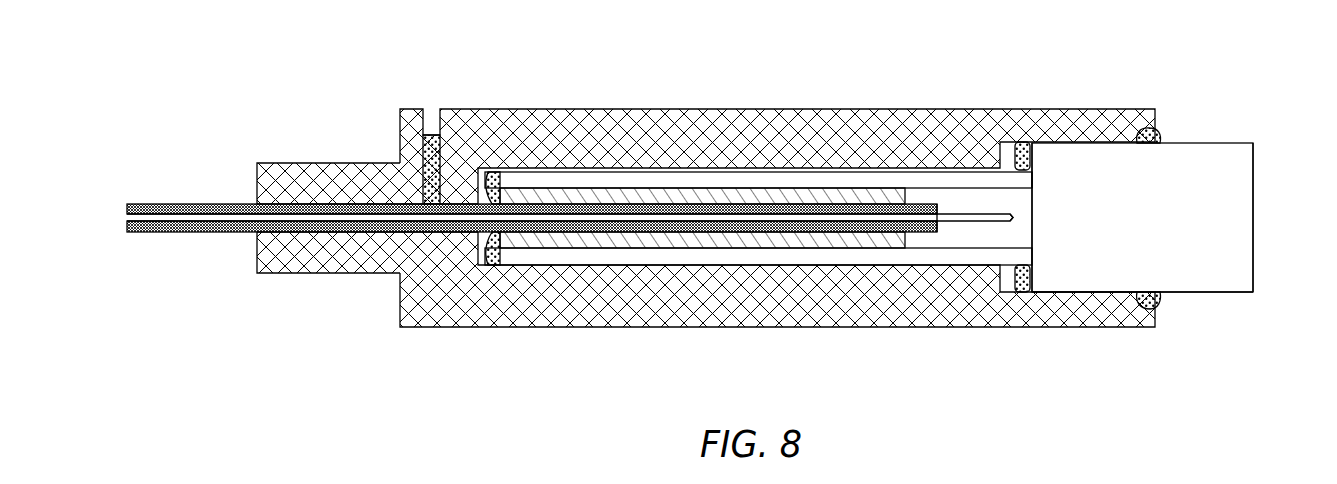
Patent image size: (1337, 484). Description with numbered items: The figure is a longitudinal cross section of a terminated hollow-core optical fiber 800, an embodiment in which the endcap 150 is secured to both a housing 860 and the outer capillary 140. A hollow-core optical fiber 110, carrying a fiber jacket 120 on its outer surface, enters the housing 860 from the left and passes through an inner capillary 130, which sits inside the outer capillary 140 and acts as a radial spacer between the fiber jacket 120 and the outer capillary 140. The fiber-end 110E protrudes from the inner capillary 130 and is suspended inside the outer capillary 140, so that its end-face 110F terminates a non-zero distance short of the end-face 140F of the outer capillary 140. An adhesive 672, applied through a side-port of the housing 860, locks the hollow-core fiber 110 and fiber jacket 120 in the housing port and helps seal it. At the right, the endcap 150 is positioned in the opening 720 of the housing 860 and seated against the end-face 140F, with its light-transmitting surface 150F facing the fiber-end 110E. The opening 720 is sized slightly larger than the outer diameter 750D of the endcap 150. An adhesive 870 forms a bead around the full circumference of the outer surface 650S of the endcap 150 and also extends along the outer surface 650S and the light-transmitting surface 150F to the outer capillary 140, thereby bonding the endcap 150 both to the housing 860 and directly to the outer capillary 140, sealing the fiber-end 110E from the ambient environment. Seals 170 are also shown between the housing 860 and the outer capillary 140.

The terminated hollow-core optical fiber 800 is at (205, 72).
The housing 860 is at (792, 146).
The fiber jacket 120 is at (233, 203).
The adhesive 672 is at (431, 134).
The seal 170 is at (492, 177).
The outer capillary 140 is at (667, 176).
The inner capillary 130 is at (755, 240).
The hollow-core optical fiber 110 is at (127, 218).
The fiber-end 110E is at (957, 222).
The end-face 110F is at (1017, 218).
The endcap 150 is at (1158, 231).
The light-transmitting surface 150F is at (1029, 233).
The end-face 140F is at (1034, 180).
The outer diameter 750D is at (1060, 291).
The adhesive 870 is at (1162, 137).
The opening 720 is at (1174, 192).
The outer surface 650S is at (1200, 297).